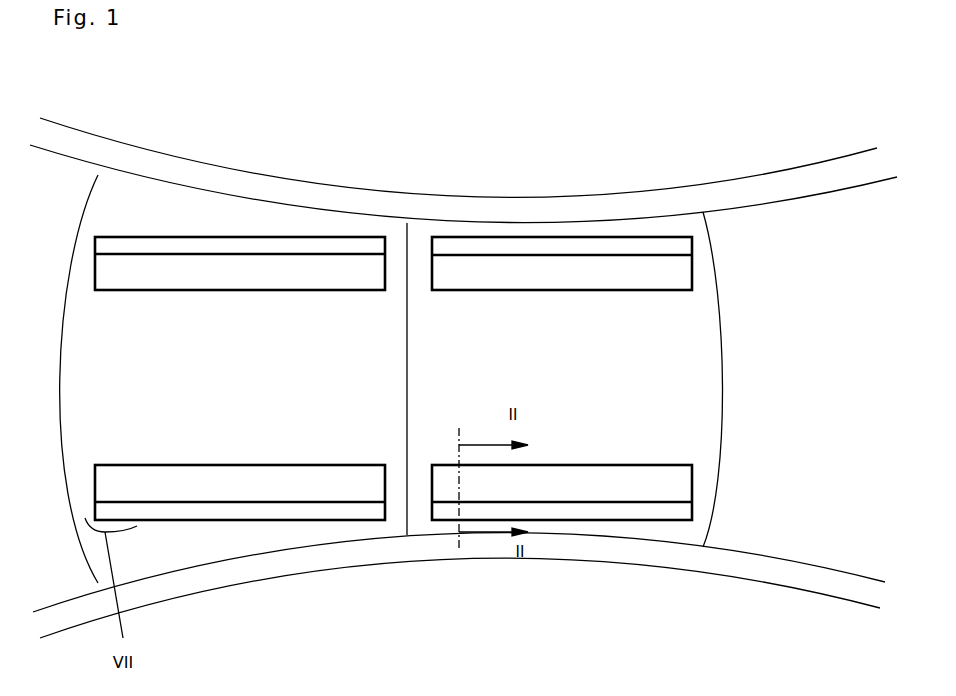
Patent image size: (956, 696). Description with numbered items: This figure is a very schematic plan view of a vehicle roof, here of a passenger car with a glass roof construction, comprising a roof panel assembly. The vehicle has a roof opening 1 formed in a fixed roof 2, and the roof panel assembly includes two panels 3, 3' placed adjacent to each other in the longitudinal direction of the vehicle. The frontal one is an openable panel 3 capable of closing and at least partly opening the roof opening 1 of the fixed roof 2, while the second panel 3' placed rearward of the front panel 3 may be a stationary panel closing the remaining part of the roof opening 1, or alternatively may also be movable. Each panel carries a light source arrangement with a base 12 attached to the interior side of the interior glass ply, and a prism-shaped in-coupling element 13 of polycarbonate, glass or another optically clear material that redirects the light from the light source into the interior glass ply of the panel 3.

The roof opening 1 is at (705, 223).
The fixed roof 2 is at (762, 245).
The openable panel 3 is at (132, 156).
The second panel 3' is at (442, 305).
The base 12 is at (265, 245).
The in-coupling element 13 is at (200, 273).